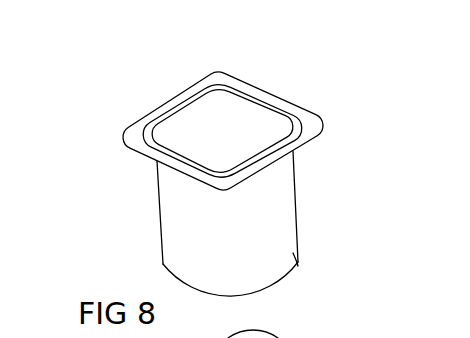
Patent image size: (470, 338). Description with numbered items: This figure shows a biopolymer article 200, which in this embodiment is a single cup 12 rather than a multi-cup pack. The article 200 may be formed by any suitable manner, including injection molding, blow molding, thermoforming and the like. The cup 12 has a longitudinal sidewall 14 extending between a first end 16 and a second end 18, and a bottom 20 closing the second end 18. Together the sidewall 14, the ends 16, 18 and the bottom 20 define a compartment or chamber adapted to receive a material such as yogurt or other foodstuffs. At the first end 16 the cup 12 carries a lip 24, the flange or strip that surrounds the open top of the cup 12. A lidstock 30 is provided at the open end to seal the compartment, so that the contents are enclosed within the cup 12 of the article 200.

The biopolymer article 200 is at (324, 103).
The lip 24 is at (216, 72).
The lidstock 30 is at (250, 108).
The first end 16 is at (158, 162).
The longitudinal sidewall 14 is at (280, 216).
The cup 12 is at (258, 243).
The second end 18 is at (286, 263).
The bottom 20 is at (259, 286).